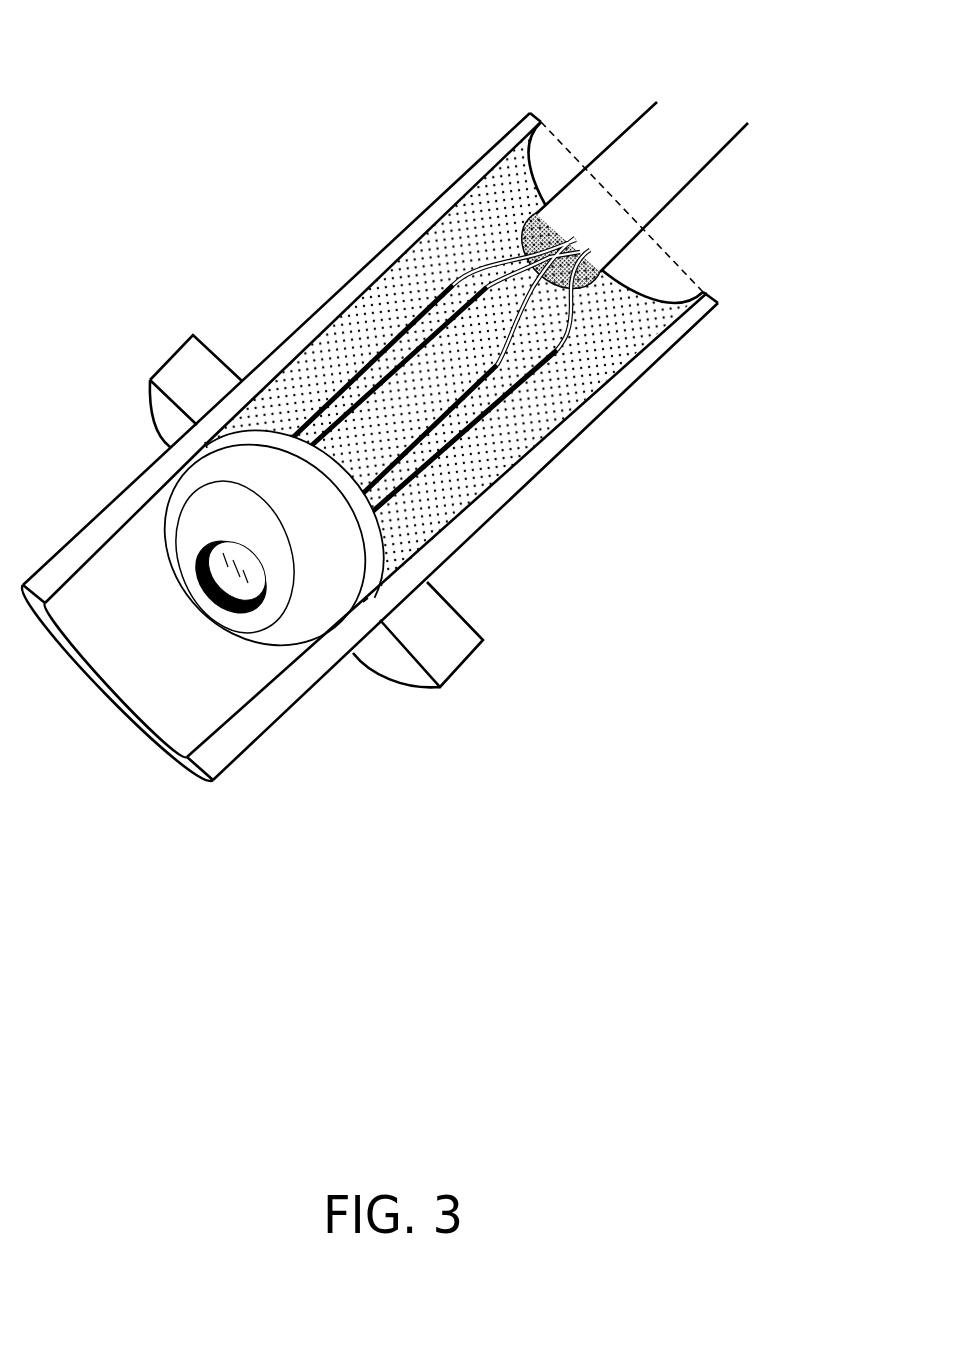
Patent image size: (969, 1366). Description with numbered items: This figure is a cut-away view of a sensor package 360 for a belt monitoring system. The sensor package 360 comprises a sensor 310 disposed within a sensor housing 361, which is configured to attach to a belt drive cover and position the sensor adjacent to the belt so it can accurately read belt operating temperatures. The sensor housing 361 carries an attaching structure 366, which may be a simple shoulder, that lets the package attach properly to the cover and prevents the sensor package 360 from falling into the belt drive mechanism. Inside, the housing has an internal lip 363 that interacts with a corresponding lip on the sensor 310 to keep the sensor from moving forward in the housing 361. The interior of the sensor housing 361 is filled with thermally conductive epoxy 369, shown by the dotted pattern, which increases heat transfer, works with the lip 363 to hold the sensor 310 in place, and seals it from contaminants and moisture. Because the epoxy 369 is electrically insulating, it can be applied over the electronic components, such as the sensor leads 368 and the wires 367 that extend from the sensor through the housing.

The sensor 310 is at (228, 575).
The sensor package 360 is at (280, 185).
The sensor housing 361 is at (547, 453).
The internal lip 363 is at (207, 445).
The attaching structure 366 is at (448, 640).
The wires 367 is at (573, 312).
The sensor leads 368 is at (540, 372).
The thermally conductive epoxy 369 is at (452, 253).